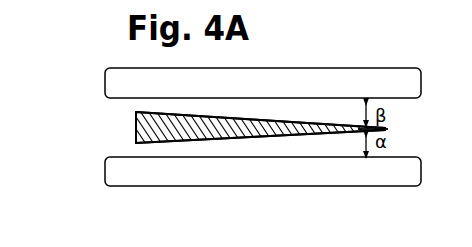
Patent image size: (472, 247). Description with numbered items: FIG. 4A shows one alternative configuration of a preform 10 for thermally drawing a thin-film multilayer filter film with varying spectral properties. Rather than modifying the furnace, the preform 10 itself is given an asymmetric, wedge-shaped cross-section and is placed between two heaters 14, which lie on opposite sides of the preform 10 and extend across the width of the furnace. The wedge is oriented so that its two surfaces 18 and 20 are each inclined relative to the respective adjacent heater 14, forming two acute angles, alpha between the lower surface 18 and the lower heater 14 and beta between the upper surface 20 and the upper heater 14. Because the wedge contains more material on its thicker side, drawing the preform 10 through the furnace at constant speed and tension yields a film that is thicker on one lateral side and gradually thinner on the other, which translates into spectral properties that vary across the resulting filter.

The preform 10 is at (152, 127).
The heaters 14 is at (113, 80).
The surface 18 is at (265, 136).
The surface 20 is at (279, 121).